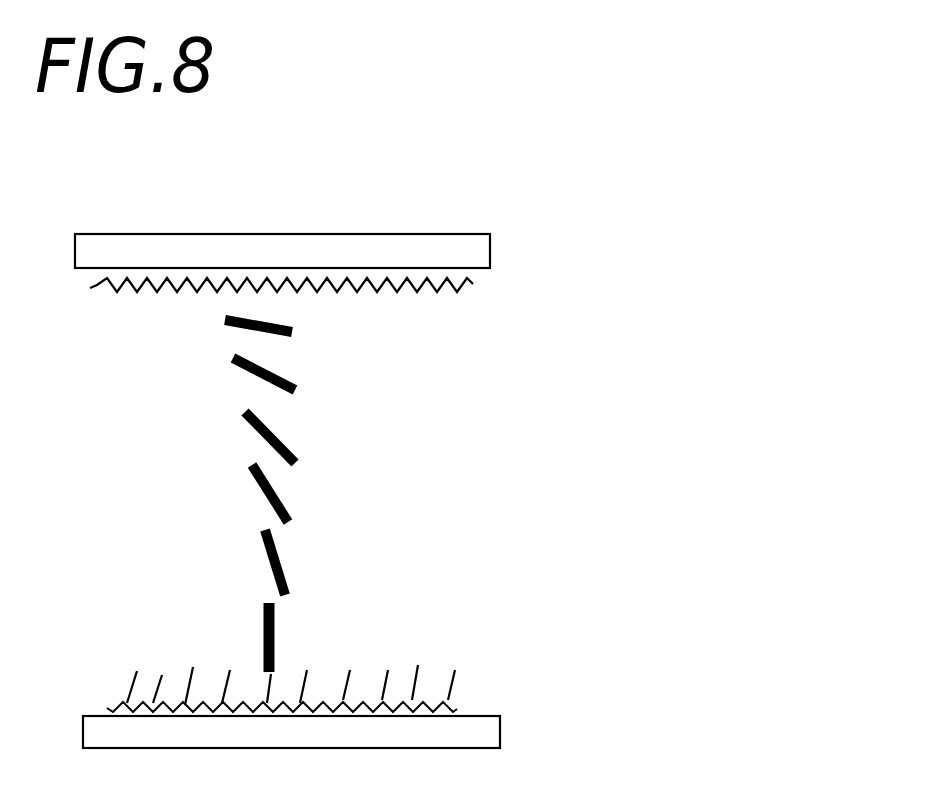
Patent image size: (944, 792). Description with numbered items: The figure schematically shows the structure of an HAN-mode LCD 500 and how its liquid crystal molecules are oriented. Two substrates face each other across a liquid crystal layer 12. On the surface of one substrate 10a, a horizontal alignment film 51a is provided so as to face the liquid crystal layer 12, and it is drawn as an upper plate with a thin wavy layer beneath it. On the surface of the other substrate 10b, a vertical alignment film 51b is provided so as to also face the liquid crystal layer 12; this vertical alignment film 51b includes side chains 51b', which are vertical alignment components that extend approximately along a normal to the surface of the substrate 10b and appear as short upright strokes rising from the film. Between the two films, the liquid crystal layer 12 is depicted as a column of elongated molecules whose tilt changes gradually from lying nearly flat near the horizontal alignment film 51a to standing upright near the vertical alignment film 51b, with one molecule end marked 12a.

The HAN-mode LCD 500 is at (541, 189).
The substrate 10a is at (491, 249).
The horizontal alignment film 51a is at (482, 286).
The liquid crystal layer 12 is at (384, 496).
The blade edge 12a is at (310, 462).
The vertical alignment film 51b is at (357, 654).
The side chains 51b' is at (509, 648).
The substrate 10b is at (501, 732).